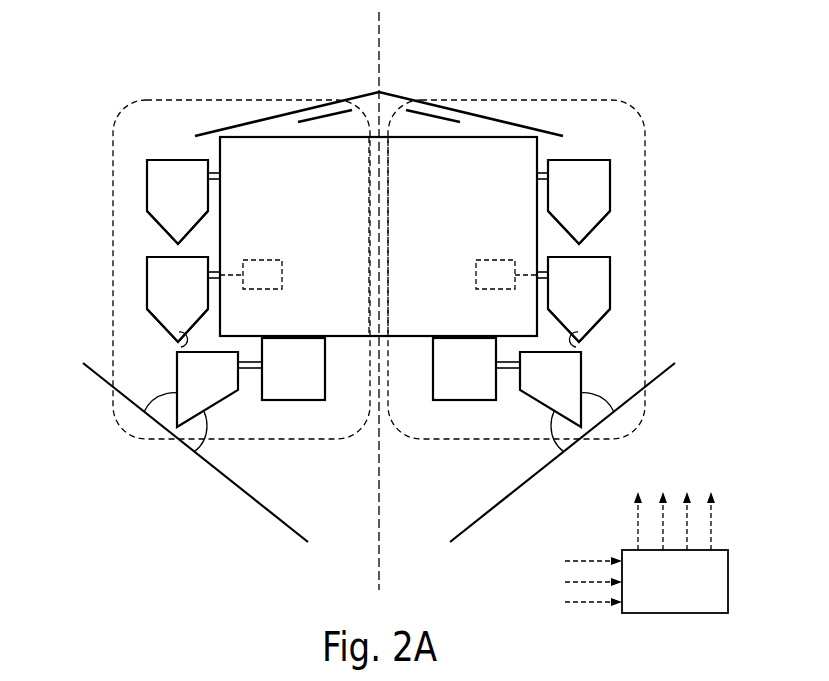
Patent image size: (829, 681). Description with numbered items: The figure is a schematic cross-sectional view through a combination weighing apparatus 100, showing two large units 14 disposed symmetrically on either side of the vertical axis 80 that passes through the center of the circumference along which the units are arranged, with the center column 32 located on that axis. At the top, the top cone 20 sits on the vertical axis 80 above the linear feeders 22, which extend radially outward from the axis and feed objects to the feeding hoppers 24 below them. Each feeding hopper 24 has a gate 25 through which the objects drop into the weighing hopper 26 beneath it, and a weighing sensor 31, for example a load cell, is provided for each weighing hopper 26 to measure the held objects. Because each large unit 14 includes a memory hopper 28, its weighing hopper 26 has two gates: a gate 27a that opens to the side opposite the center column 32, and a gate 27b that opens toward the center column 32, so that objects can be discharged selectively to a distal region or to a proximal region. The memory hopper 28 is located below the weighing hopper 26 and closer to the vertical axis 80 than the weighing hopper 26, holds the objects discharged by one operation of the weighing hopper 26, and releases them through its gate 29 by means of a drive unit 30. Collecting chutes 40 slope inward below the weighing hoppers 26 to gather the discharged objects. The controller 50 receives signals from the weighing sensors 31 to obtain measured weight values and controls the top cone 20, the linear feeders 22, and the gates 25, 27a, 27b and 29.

The combination weighing apparatus 100 is at (692, 36).
The vertical axis 80 is at (382, 30).
The large unit 14 is at (213, 98).
The top cone 20 is at (394, 91).
The linear feeder 22 is at (260, 122).
The feeding hopper 24 is at (147, 185).
The gate 25 is at (160, 228).
The weighing hopper 26 is at (147, 283).
The gate 27a is at (158, 322).
The gate 27b is at (188, 344).
The memory hopper 28 is at (176, 408).
The gate 29 is at (192, 458).
The drive unit 30 is at (298, 400).
The weighing sensor 31 is at (263, 260).
The center column 32 is at (378, 337).
The collecting chute 40 is at (226, 485).
The controller 50 is at (730, 582).